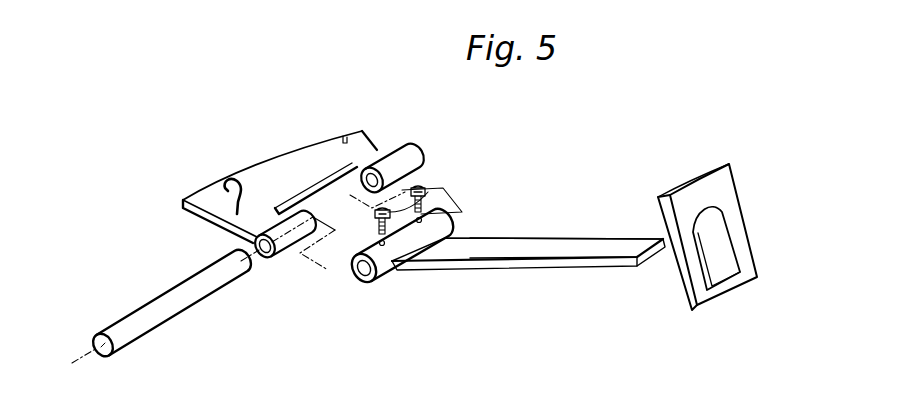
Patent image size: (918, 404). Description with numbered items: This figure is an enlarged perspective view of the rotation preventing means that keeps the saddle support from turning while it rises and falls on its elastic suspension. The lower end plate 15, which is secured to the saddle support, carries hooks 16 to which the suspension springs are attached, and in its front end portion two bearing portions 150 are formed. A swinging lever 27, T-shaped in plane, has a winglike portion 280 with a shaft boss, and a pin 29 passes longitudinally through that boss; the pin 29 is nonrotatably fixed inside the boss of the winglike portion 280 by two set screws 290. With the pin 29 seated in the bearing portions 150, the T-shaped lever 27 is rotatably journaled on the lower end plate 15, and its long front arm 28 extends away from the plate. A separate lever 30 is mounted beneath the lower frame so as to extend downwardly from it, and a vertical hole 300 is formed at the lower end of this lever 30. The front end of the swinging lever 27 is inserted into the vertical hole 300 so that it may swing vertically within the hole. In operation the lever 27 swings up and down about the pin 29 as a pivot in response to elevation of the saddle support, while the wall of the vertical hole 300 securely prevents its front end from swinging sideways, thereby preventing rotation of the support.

The lower end plate 15 is at (272, 163).
The hook 16 is at (231, 177).
The bearing portion 150 is at (283, 260).
The pin 29 is at (202, 267).
The winglike portion 280 is at (371, 287).
The swinging lever 27 is at (421, 268).
The bar 28 is at (500, 256).
The set screw 290 is at (428, 190).
The lever 30 is at (733, 179).
The vertical hole 300 is at (727, 232).